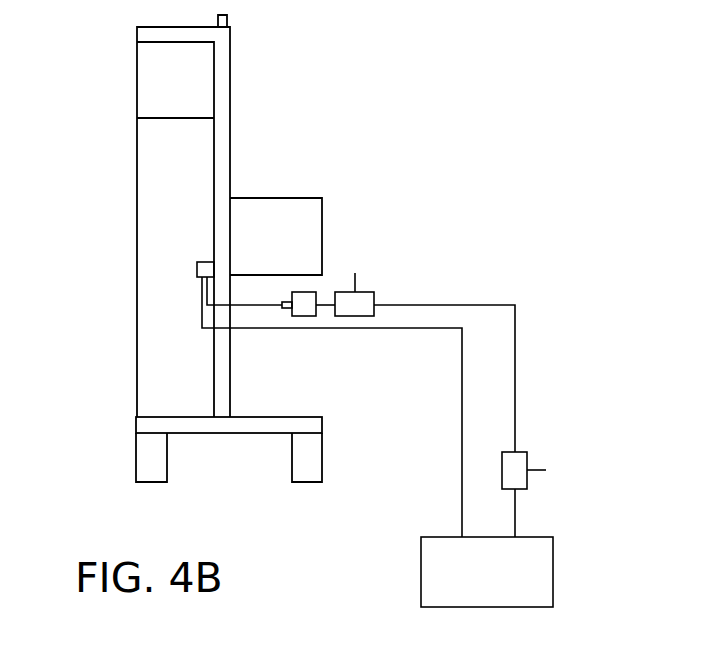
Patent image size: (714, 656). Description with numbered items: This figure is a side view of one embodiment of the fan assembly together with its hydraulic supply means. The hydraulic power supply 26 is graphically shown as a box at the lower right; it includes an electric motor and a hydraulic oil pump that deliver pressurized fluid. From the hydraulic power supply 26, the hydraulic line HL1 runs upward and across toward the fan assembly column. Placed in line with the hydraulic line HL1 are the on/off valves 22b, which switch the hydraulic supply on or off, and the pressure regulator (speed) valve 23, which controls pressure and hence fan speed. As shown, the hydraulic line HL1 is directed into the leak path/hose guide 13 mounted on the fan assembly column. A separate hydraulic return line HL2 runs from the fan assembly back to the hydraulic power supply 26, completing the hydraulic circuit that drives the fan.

The leak path/hose guide 13 is at (197, 268).
The pressure regulator (speed) valve 23 is at (305, 316).
The on/off valves 22b is at (357, 283).
The hydraulic line HL1 is at (515, 350).
The hydraulic return line HL2 is at (462, 408).
The hydraulic power supply 26 is at (553, 571).